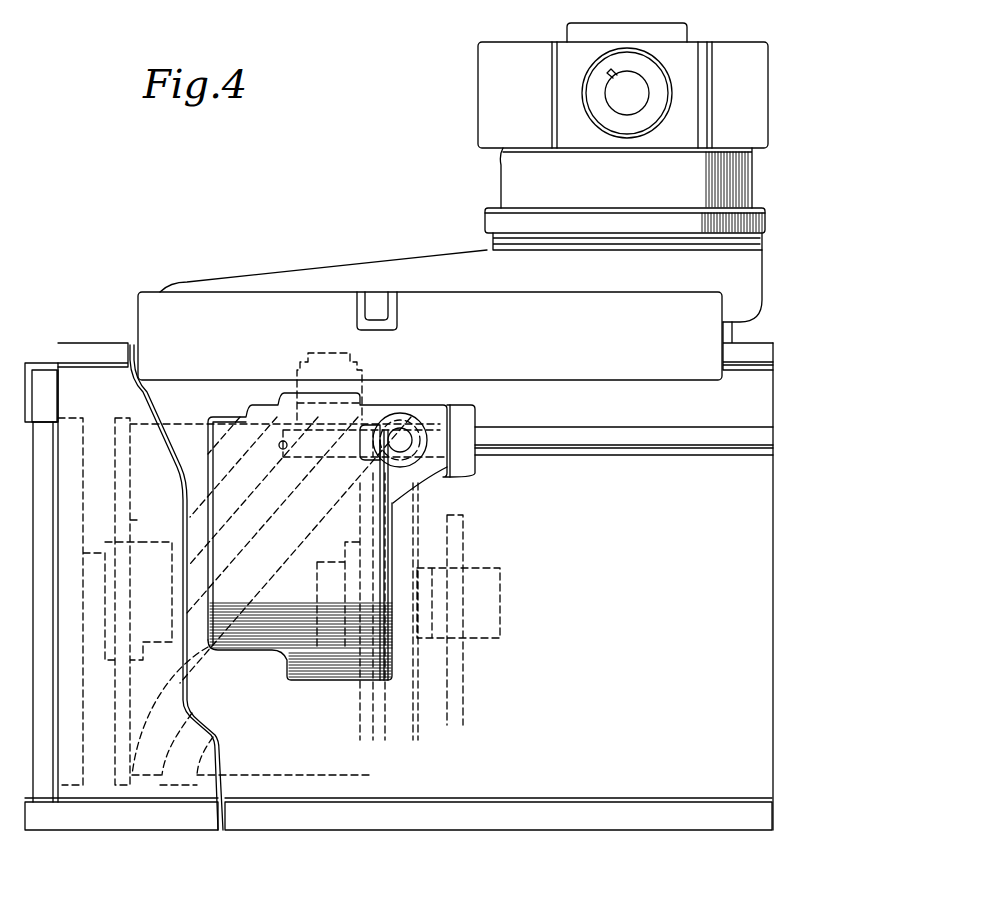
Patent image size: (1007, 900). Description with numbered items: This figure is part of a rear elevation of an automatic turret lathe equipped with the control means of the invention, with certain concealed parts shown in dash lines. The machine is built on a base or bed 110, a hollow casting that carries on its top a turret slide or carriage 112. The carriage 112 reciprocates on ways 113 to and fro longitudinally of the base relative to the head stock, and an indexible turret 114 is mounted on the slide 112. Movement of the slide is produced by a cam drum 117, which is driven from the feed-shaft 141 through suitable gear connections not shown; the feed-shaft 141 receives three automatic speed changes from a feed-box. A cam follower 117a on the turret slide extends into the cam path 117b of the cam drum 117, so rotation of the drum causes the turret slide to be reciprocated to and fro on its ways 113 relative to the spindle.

The base or bed 110 is at (399, 586).
The turret slide or carriage 112 is at (368, 268).
The ways 113 is at (91, 352).
The indexible turret 114 is at (515, 180).
The cam drum 117 is at (263, 763).
The cam follower 117a is at (333, 413).
The cam path 117b is at (262, 503).
The feed-shaft 141 is at (582, 455).